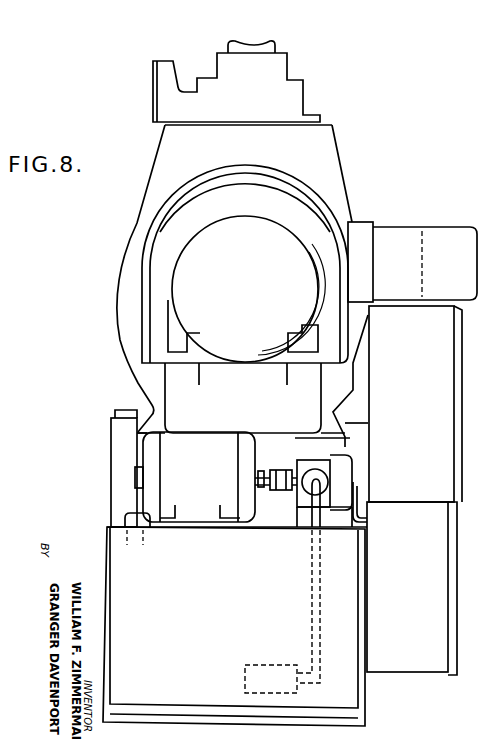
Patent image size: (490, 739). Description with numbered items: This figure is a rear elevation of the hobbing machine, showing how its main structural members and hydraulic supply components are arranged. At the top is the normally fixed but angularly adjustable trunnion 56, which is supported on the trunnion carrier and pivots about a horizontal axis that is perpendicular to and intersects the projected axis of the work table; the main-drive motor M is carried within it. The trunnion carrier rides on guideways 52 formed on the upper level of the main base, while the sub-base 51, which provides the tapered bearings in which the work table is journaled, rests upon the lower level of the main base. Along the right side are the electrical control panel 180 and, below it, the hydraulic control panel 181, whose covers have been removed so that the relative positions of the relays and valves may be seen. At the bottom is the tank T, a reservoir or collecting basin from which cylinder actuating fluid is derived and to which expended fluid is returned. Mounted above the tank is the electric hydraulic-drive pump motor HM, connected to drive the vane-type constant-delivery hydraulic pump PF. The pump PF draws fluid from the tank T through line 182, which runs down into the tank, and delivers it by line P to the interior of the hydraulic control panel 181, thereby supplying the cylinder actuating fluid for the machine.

The trunnion 56 is at (330, 157).
The main-drive motor M is at (248, 289).
The electrical control panel 180 is at (415, 404).
The hydraulic control panel 181 is at (412, 588).
The line 182 is at (319, 588).
The sub-base 51 is at (117, 462).
The guideways 52 is at (137, 441).
The hydraulic-drive pump motor HM is at (199, 477).
The constant-delivery hydraulic pump PF is at (318, 468).
The line P is at (357, 498).
The tank T is at (353, 688).